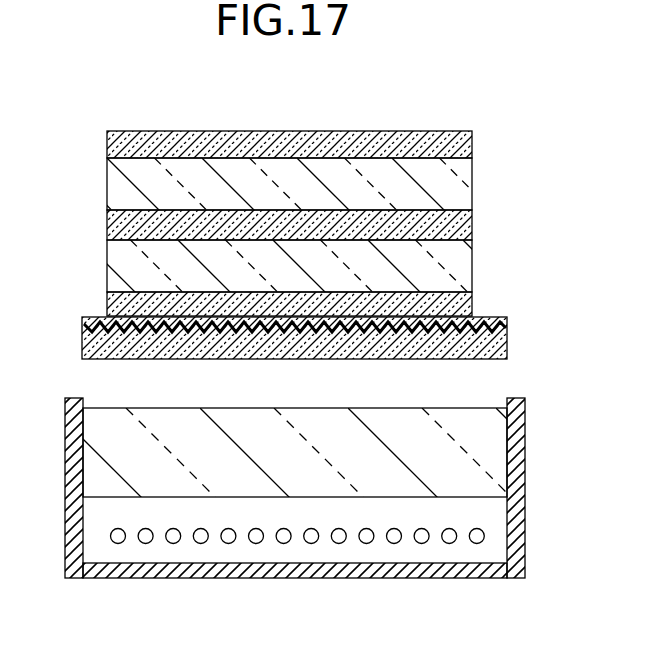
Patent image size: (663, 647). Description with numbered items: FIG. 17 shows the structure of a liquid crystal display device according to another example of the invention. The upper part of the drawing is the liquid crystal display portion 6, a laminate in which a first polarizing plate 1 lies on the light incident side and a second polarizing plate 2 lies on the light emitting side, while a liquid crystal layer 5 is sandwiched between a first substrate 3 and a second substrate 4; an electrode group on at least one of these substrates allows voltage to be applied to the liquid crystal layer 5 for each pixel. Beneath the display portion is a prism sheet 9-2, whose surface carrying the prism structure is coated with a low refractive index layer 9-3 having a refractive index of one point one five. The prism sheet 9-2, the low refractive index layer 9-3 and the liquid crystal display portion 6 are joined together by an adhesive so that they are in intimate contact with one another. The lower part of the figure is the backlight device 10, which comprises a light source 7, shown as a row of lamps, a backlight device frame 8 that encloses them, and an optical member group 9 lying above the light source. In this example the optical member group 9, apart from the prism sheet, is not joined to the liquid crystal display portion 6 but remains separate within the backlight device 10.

The first polarizing plate 1 is at (324, 298).
The second polarizing plate 2 is at (473, 146).
The first substrate 3 is at (473, 265).
The second substrate 4 is at (473, 190).
The liquid crystal layer 5 is at (473, 219).
The liquid crystal display portion 6 is at (348, 222).
The light source 7 is at (344, 518).
The backlight device frame 8 is at (526, 552).
The optical member group 9 is at (488, 447).
The prism sheet 9-2 is at (508, 350).
The low refractive index layer 9-3 is at (508, 321).
The backlight device 10 is at (350, 487).